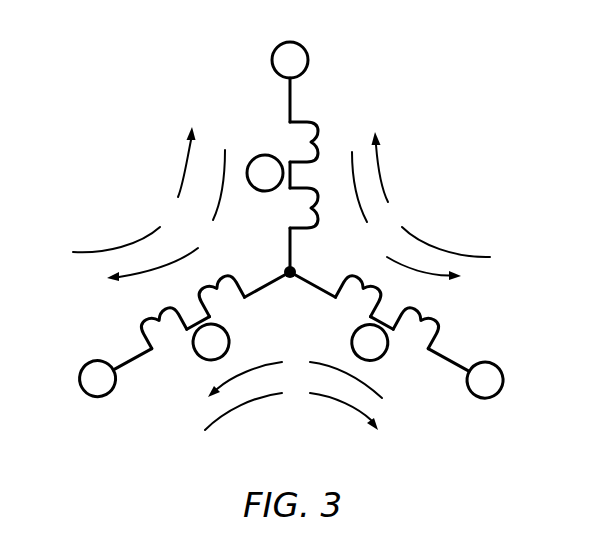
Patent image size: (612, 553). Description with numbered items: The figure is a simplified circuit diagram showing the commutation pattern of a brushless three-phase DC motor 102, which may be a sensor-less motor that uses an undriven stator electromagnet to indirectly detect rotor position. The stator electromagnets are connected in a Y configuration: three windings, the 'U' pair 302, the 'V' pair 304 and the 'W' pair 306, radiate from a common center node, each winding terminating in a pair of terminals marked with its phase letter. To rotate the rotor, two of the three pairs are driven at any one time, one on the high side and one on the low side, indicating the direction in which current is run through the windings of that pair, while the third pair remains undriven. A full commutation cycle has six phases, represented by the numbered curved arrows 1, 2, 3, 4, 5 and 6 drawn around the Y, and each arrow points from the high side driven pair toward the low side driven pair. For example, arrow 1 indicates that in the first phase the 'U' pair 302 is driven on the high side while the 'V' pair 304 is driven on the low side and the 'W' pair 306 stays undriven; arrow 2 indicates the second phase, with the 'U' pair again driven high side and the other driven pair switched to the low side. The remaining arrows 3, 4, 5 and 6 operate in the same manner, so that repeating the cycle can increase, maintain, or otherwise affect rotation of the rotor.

The motor 102 is at (453, 83).
The 'U' pair of electromagnets 302 is at (266, 156).
The 'V' pair of electromagnets 304 is at (467, 380).
The 'W' pair of electromagnets 306 is at (199, 355).
The first commutation phase arrow 1 is at (406, 216).
The second commutation phase arrow 2 is at (166, 215).
The third commutation phase arrow 3 is at (295, 374).
The fourth commutation phase arrow 4 is at (431, 194).
The fifth commutation phase arrow 5 is at (134, 189).
The sixth commutation phase arrow 6 is at (291, 405).